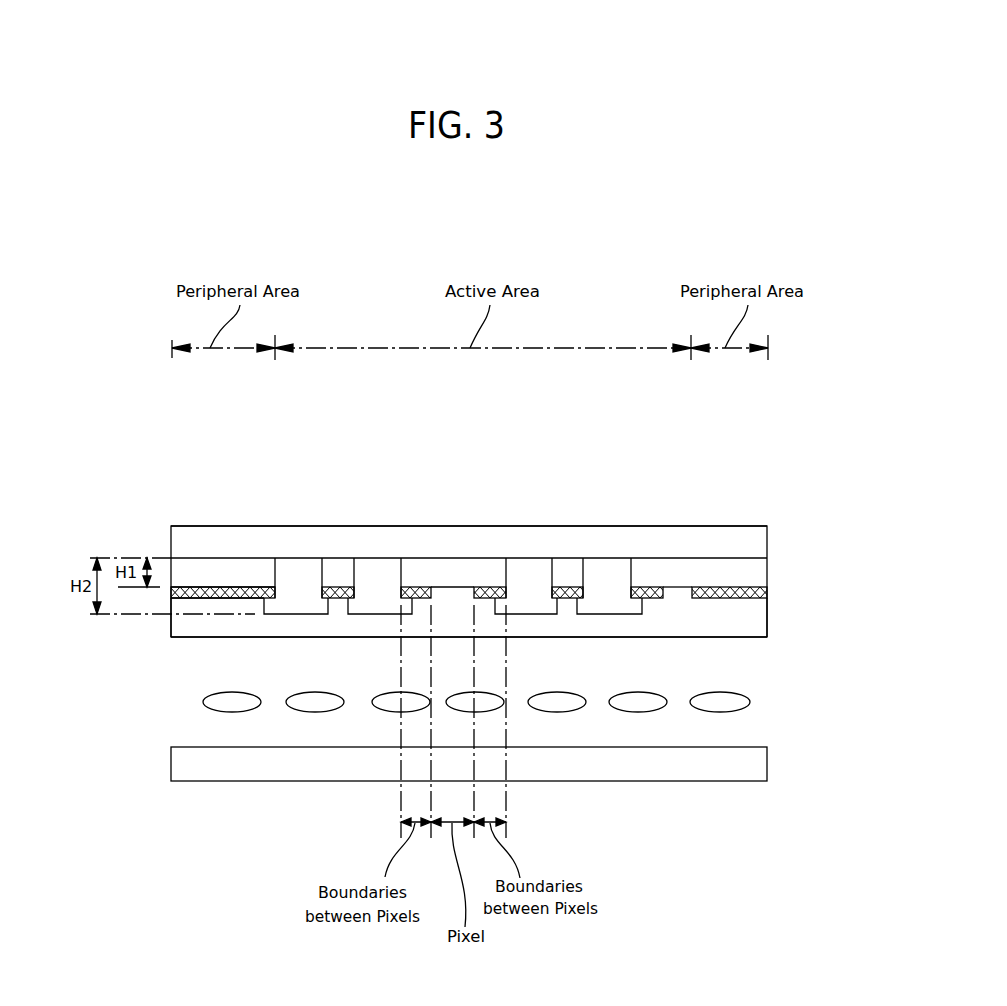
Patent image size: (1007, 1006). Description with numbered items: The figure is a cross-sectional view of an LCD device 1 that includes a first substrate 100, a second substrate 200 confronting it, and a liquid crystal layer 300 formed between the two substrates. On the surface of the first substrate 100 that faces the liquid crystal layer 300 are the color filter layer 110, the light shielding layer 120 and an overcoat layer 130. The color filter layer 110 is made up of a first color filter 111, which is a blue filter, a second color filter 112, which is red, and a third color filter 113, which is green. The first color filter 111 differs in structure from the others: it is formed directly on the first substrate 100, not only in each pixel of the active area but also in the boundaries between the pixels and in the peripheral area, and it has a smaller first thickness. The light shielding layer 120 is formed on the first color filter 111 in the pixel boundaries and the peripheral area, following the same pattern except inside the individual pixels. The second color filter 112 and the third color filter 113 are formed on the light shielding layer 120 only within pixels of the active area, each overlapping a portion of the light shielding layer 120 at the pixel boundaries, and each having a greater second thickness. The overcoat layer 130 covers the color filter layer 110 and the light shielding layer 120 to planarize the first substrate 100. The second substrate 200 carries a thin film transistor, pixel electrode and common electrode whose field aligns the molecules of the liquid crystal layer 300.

The display device 1 is at (150, 487).
The first substrate 100 is at (768, 541).
The color filter layer 110 is at (592, 414).
The first color filter 111 is at (327, 560).
The second color filter 112 is at (520, 570).
The third color filter 113 is at (621, 568).
The light shielding layer 120 is at (354, 593).
The overcoat layer 130 is at (768, 622).
The second substrate 200 is at (768, 761).
The liquid crystal layer 300 is at (749, 700).